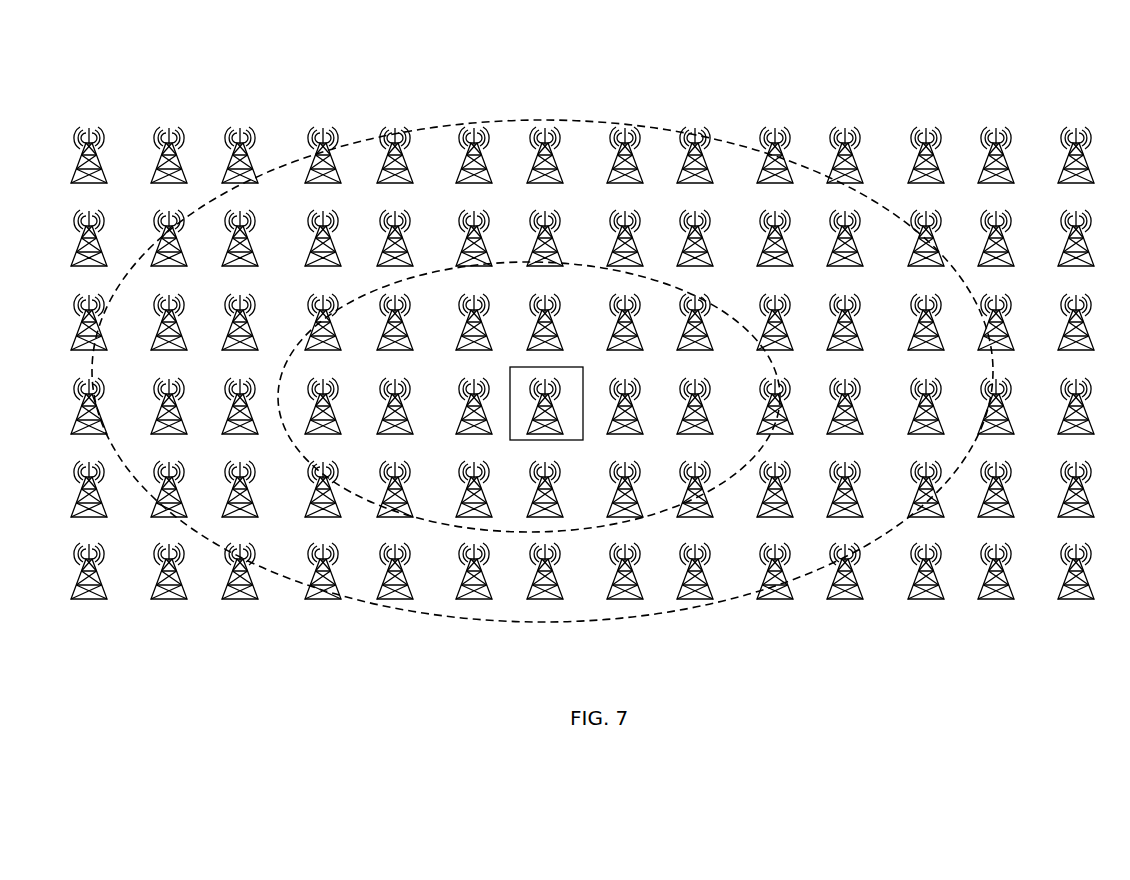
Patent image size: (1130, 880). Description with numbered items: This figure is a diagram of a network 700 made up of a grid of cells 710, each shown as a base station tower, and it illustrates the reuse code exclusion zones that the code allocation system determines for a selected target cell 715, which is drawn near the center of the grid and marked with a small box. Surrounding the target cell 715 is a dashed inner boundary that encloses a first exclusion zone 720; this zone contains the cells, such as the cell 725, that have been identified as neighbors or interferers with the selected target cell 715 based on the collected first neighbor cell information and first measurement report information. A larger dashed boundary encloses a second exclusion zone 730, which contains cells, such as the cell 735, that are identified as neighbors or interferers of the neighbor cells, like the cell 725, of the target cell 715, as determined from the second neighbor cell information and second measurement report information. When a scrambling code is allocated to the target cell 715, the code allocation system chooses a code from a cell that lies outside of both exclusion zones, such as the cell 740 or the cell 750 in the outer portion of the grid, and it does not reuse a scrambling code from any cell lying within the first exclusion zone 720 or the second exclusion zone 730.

The network 700 is at (211, 70).
The cells 710 is at (990, 120).
The target cell 715 is at (561, 366).
The first exclusion zone 720 is at (697, 296).
The cell 725 is at (620, 468).
The second exclusion zone 730 is at (583, 122).
The cell 735 is at (330, 218).
The cell 740 is at (1000, 545).
The cell 750 is at (84, 210).